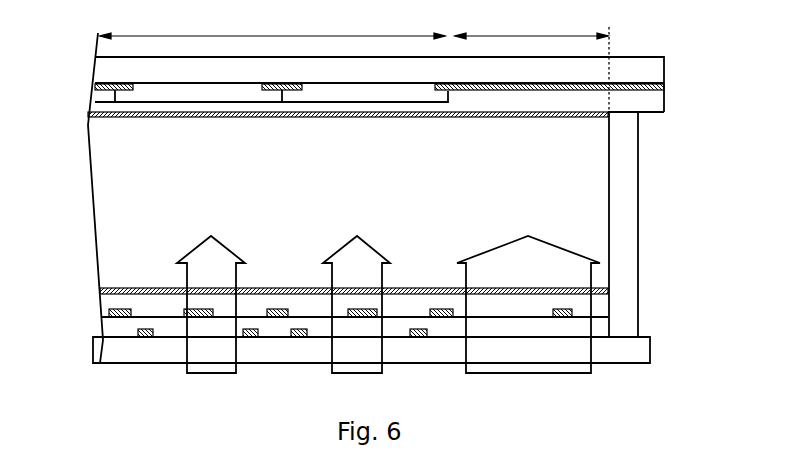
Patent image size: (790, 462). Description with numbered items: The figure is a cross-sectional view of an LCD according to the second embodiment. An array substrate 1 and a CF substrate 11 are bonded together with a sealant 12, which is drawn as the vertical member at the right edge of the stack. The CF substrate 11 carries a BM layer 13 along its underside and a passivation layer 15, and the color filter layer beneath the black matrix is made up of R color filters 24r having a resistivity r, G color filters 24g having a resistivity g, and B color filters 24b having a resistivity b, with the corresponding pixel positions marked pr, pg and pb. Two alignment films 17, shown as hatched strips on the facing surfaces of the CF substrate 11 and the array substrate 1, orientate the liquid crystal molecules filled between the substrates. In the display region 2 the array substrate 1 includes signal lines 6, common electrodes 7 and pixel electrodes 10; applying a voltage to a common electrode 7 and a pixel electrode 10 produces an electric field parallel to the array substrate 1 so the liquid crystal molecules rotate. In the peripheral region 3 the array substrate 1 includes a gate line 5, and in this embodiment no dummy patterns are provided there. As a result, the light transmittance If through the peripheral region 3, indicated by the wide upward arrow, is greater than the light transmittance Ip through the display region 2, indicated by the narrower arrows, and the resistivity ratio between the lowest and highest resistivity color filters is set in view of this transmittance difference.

The array substrate 1 is at (641, 347).
The display region 2 is at (272, 28).
The peripheral region 3 is at (532, 65).
The gate line 5 is at (559, 318).
The signal line 6 is at (116, 318).
The common electrode 7 is at (144, 338).
The pixel electrode 10 is at (199, 318).
The CF substrate 11 is at (627, 58).
The sealant 12 is at (632, 181).
The BM layer 13 is at (664, 88).
The passivation layer 15 is at (664, 103).
The alignment film 17 is at (608, 115).
The R color filter 24r is at (100, 84).
The G color filter 24g is at (226, 92).
The B color filter 24b is at (353, 90).
The red pixel pr is at (95, 95).
The green pixel pg is at (190, 96).
The blue pixel pb is at (385, 96).
The light transmittance lp Ip is at (216, 374).
The light transmittance lf If is at (565, 374).